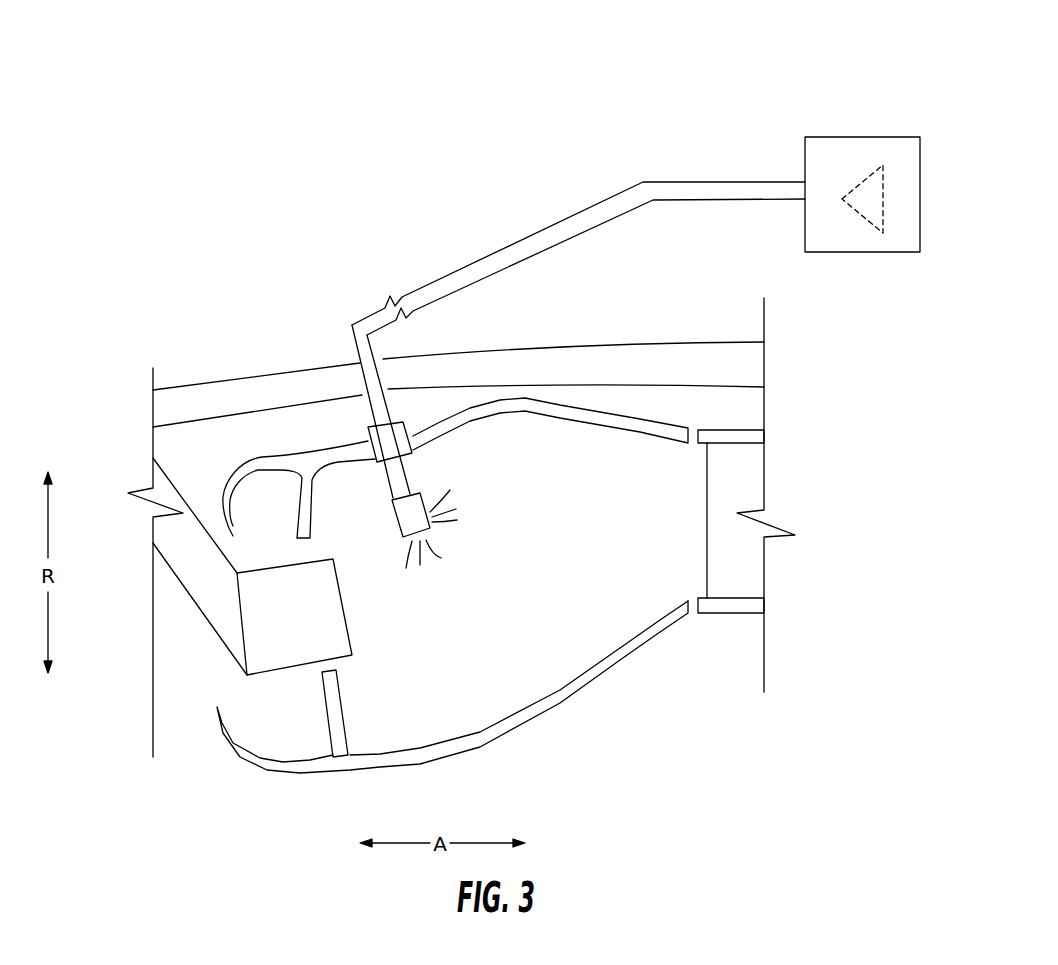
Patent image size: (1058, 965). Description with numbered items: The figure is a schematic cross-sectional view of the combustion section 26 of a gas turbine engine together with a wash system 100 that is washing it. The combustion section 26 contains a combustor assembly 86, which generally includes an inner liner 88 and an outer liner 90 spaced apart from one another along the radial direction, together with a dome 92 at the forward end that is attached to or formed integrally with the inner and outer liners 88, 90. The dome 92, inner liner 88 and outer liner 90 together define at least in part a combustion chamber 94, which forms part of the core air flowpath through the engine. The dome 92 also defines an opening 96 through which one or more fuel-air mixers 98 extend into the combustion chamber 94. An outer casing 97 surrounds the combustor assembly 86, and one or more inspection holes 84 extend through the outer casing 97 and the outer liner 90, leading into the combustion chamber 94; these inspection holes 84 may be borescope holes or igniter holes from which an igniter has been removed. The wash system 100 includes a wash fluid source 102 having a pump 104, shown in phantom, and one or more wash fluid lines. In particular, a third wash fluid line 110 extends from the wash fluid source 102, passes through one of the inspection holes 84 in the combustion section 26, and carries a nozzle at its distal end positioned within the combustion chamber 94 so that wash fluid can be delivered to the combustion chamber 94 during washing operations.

The combustion section 26 is at (265, 324).
The inspection holes 84 is at (377, 349).
The combustor assembly 86 is at (621, 378).
The inner liner 88 is at (560, 705).
The outer liner 90 is at (538, 420).
The dome 92 is at (262, 506).
The combustion chamber 94 is at (543, 567).
The opening 96 is at (366, 658).
The outer casing 97 is at (527, 367).
The fuel-air mixers 98 is at (237, 626).
The wash system 100 is at (720, 118).
The wash fluid source 102 is at (860, 137).
The pump 104 is at (883, 187).
The third wash fluid line 110 is at (492, 254).